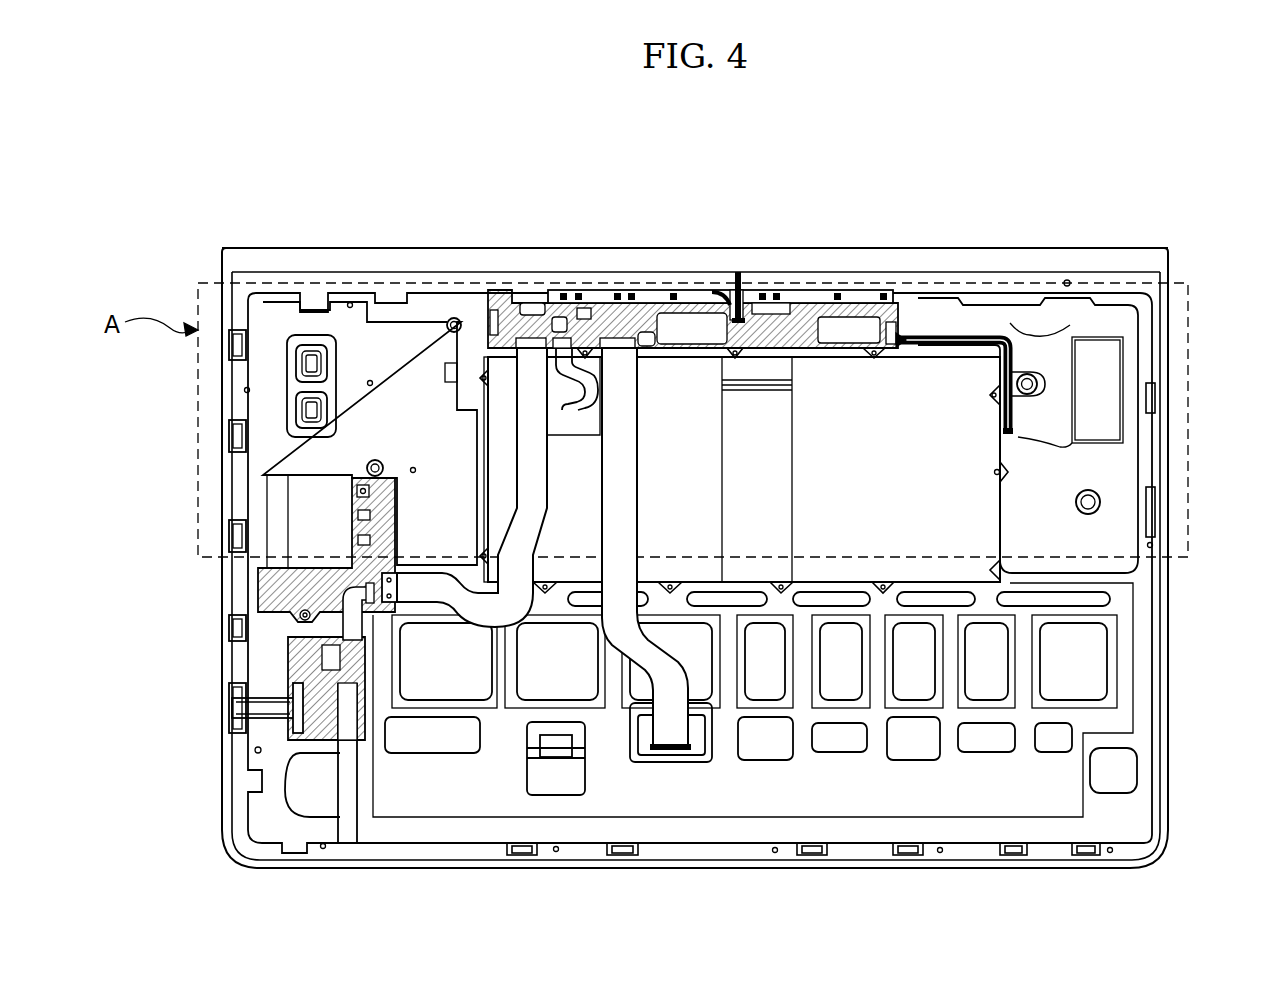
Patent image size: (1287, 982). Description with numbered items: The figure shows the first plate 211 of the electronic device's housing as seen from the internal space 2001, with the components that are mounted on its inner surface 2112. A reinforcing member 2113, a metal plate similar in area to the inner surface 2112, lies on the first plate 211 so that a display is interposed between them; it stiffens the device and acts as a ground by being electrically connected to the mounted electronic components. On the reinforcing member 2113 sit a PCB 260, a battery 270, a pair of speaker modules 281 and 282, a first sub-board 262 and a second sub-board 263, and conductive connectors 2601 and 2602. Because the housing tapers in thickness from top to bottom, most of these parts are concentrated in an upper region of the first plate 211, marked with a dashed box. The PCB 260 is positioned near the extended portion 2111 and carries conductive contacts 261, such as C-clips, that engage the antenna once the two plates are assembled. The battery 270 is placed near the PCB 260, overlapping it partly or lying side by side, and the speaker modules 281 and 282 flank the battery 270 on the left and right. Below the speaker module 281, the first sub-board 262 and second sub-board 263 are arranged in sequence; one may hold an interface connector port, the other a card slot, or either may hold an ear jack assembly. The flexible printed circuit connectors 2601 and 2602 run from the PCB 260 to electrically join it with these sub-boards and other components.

The first plate 211 is at (1172, 301).
The extended portion 2111 is at (985, 263).
The inner surface 2112 is at (292, 834).
The reinforcing member 2113 is at (858, 786).
The internal space 2001 is at (404, 782).
The PCB 260 is at (503, 293).
The conductive contact 261 is at (580, 290).
The battery 270 is at (917, 420).
The speaker module 281 is at (298, 455).
The speaker module 282 is at (1105, 520).
The first sub-board 262 is at (273, 582).
The second sub-board 263 is at (318, 730).
The conductive connector 2601 is at (486, 605).
The conductive connector 2602 is at (640, 640).